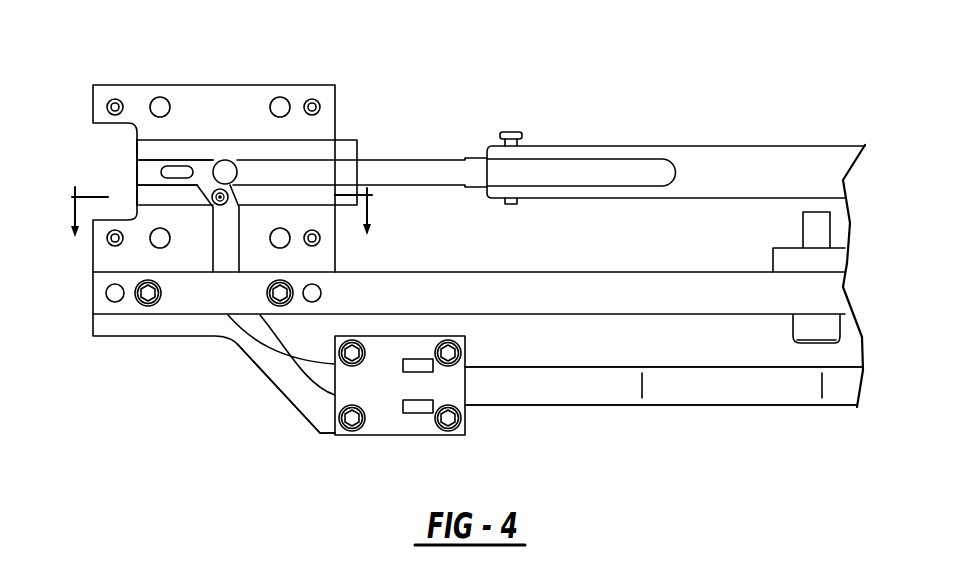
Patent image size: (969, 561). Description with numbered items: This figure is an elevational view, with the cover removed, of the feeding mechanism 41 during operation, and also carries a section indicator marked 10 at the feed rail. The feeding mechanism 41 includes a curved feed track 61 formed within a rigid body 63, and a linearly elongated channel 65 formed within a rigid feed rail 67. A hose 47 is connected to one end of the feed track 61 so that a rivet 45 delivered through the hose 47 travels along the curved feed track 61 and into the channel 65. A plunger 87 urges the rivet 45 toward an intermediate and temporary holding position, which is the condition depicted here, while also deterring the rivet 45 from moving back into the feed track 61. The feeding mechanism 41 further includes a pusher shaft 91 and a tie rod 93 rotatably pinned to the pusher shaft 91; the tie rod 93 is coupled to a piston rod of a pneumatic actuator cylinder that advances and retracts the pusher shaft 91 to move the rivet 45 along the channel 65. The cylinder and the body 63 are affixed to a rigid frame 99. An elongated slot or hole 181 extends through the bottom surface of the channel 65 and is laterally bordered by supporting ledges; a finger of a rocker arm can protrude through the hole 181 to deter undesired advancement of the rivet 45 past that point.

The feeding mechanism 41 is at (490, 86).
The pusher shaft 91 is at (332, 172).
The elongated slot or hole 181 is at (193, 165).
The feed rail 67 is at (135, 151).
The channel 65 is at (156, 170).
The rivet 45 is at (226, 168).
The plunger 87 is at (217, 201).
The tie rod 93 is at (581, 148).
The frame 99 is at (570, 290).
The hose 47 is at (542, 386).
The feed track 61 is at (272, 348).
The body 63 is at (300, 417).
The section line 10 is at (219, 226).